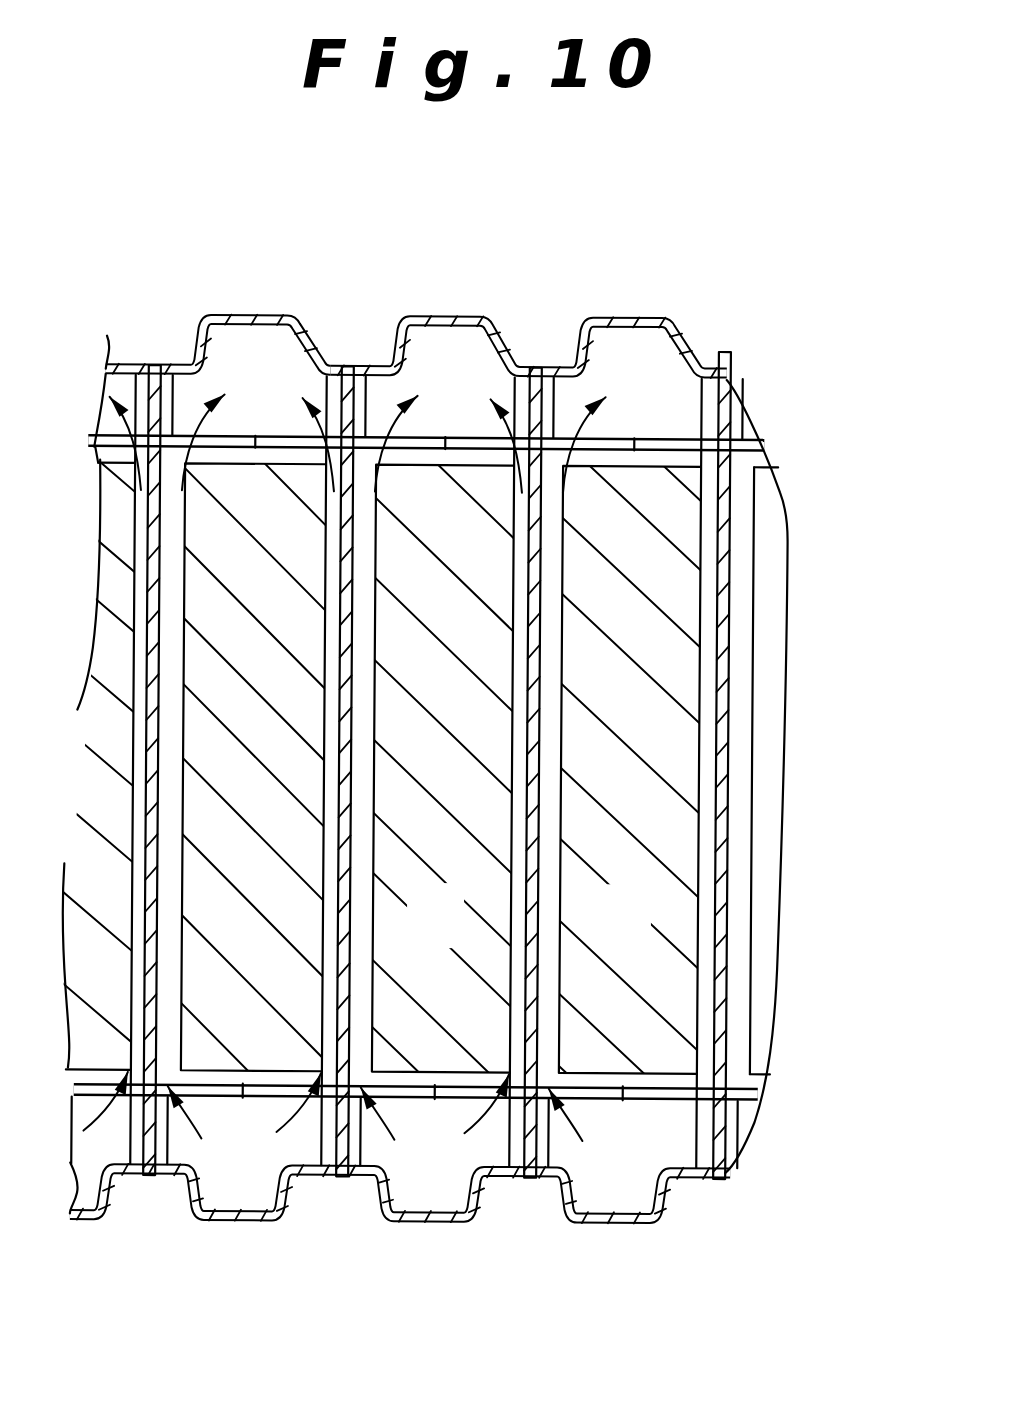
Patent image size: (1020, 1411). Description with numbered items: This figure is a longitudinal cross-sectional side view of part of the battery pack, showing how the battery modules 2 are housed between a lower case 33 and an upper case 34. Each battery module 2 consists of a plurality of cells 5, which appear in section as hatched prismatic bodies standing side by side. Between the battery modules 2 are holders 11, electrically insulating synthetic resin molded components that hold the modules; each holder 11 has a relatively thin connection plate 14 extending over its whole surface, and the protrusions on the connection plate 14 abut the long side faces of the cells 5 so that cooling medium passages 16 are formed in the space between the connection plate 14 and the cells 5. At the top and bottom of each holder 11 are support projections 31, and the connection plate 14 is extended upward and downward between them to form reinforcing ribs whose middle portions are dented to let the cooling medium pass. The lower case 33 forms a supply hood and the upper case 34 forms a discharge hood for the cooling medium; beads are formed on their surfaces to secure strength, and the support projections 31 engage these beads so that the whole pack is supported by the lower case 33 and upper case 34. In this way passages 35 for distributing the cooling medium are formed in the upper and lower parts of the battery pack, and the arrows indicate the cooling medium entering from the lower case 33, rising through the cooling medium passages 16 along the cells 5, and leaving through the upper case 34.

The battery module 2 is at (697, 1012).
The cell 5 is at (455, 939).
The holder 11 is at (737, 630).
The connection plate 14 is at (722, 780).
The cooling medium passage 16 is at (737, 870).
The support projection 31 is at (552, 400).
The lower case 33 is at (397, 1224).
The upper case 34 is at (268, 316).
The passage 35 is at (440, 385).